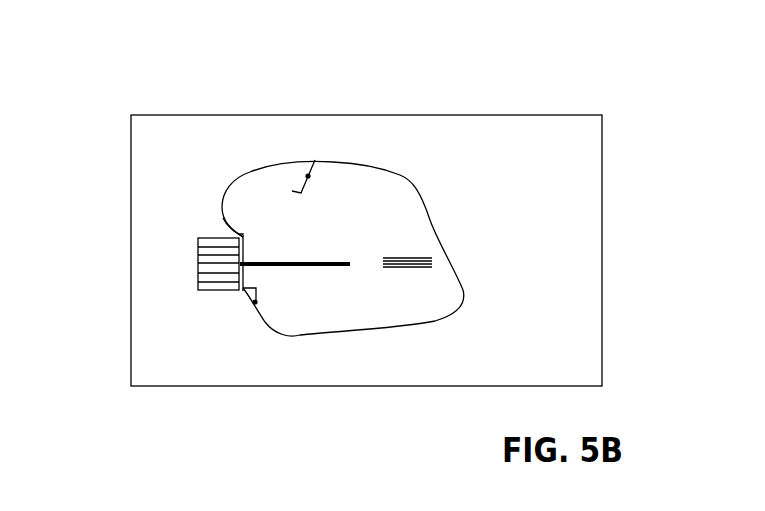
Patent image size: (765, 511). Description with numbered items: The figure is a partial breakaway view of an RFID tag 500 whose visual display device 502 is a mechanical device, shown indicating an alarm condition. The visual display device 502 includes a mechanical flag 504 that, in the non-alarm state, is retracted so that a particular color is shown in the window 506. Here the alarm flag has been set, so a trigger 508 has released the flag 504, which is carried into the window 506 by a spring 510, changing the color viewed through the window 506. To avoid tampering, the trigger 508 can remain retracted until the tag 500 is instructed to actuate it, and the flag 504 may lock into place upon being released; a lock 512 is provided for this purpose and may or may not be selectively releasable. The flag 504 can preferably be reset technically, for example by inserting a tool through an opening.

The tag 500 is at (100, 148).
The visual display device 502 is at (206, 207).
The mechanical flag 504 is at (250, 228).
The window 506 is at (198, 263).
The trigger 508 is at (305, 187).
The spring 510 is at (350, 264).
The lock 512 is at (258, 292).